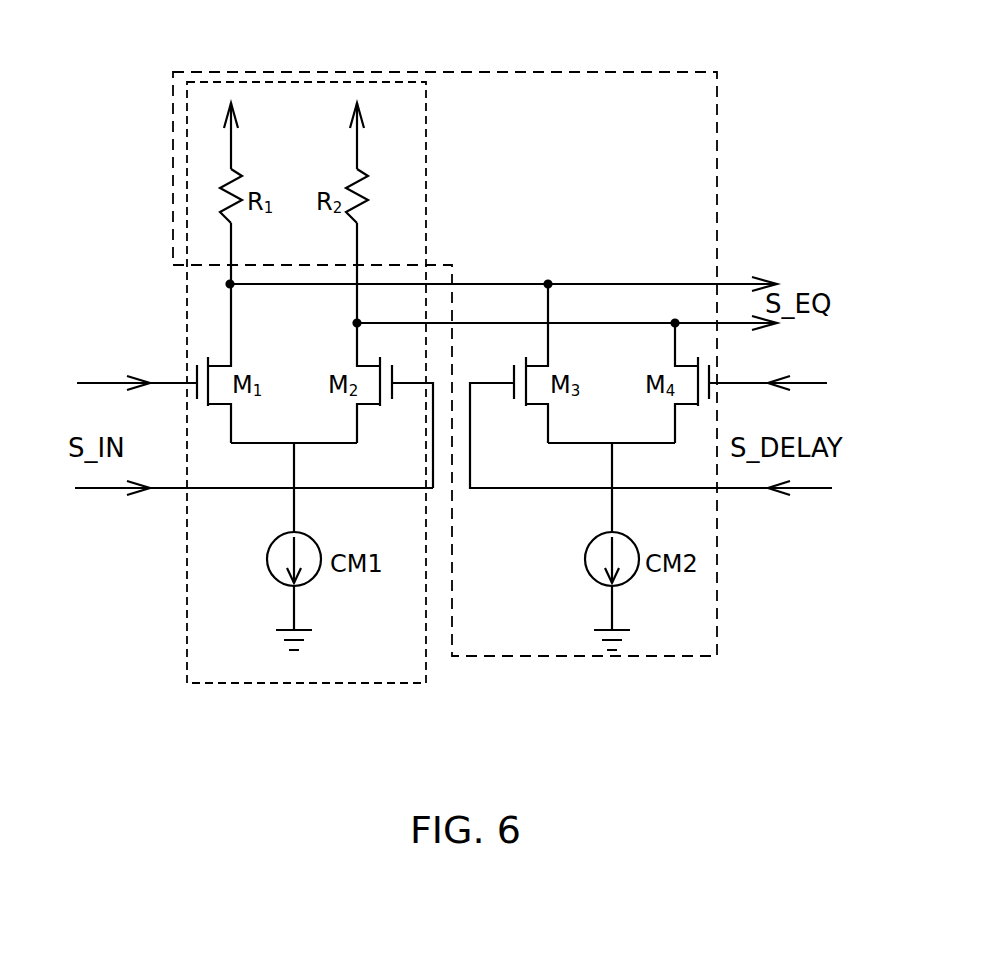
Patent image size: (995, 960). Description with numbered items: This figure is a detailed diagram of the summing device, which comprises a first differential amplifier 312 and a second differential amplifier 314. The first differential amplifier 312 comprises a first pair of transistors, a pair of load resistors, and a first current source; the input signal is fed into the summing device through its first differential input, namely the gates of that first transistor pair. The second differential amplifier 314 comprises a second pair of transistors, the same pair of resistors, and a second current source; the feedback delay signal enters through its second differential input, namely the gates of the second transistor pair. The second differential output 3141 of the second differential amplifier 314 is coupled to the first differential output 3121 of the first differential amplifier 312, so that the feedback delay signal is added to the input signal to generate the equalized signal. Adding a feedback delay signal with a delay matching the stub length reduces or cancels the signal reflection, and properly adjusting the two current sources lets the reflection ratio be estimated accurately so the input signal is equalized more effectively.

The second differential amplifier 314 is at (545, 72).
The first differential amplifier 312 is at (426, 158).
The first differential output 3121 is at (357, 323).
The second differential output 3141 is at (675, 323).